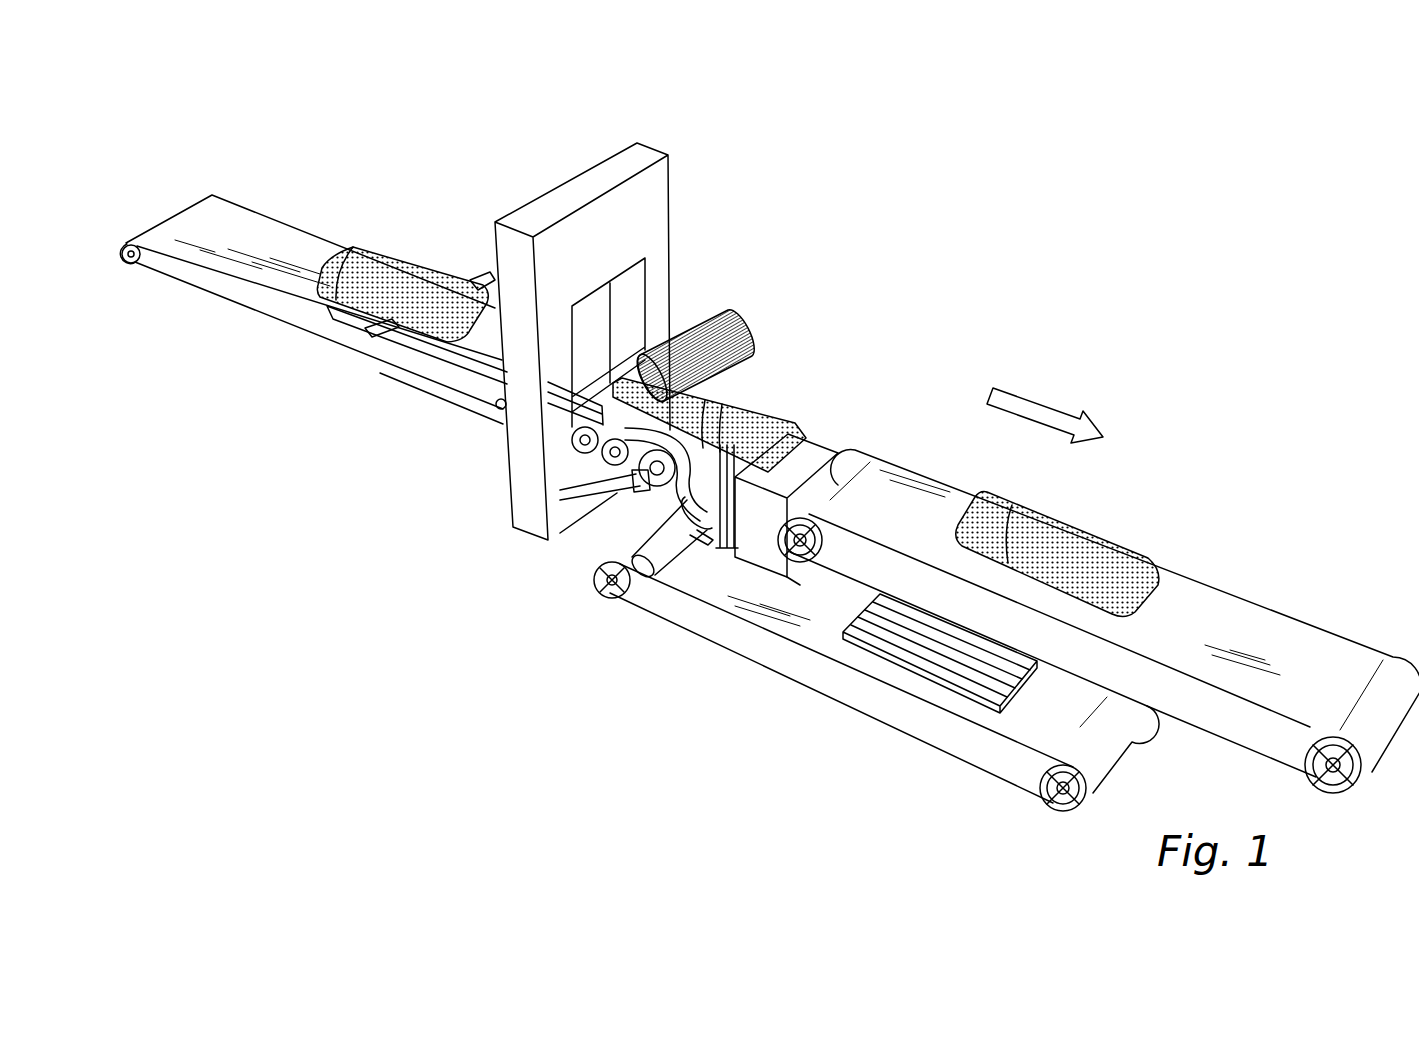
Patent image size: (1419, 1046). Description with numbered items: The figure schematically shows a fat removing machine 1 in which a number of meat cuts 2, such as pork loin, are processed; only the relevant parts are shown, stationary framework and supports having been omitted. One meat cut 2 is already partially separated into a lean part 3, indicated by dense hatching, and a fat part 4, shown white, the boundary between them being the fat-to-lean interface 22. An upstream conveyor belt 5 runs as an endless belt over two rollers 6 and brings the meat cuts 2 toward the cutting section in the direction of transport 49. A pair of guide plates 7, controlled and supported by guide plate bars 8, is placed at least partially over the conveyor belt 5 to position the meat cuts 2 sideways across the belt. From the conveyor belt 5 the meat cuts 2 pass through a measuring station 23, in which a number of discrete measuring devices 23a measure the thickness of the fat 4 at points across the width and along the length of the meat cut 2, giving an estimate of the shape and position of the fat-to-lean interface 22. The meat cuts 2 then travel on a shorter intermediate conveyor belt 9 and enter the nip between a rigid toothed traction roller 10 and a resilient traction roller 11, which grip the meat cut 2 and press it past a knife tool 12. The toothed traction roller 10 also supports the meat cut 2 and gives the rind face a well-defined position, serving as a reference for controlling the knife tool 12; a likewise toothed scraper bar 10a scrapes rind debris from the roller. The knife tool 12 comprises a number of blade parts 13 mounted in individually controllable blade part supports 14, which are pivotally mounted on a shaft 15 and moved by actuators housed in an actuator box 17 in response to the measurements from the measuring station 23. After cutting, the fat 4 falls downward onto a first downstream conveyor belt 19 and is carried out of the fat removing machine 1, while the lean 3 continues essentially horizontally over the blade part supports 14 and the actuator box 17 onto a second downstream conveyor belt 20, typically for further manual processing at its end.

The fat removing machine 1 is at (915, 324).
The meat cut 2 is at (396, 228).
The lean 3 is at (684, 399).
The fat 4 is at (343, 308).
The conveyor belt 5 is at (255, 232).
The rollers 6 is at (131, 265).
The guide plates 7 is at (440, 270).
The guide plate bars 8 is at (487, 275).
The conveyor belt 9 is at (585, 455).
The toothed traction roller 10 is at (655, 488).
The toothed scraper bar 10a is at (630, 478).
The resilient traction roller 11 is at (740, 328).
The knife tool 12 is at (803, 446).
The blade parts 13 is at (752, 437).
The blade part supports 14 is at (763, 560).
The shaft 15 is at (648, 578).
The actuator box 17 is at (788, 570).
The first downstream conveyor belt 19 is at (827, 605).
The second downstream conveyor belt 20 is at (1265, 622).
The fat-to-lean interface 22 is at (332, 303).
The measuring station 23 is at (640, 148).
The measuring devices 23a is at (607, 362).
The direction of transport 49 is at (1040, 402).